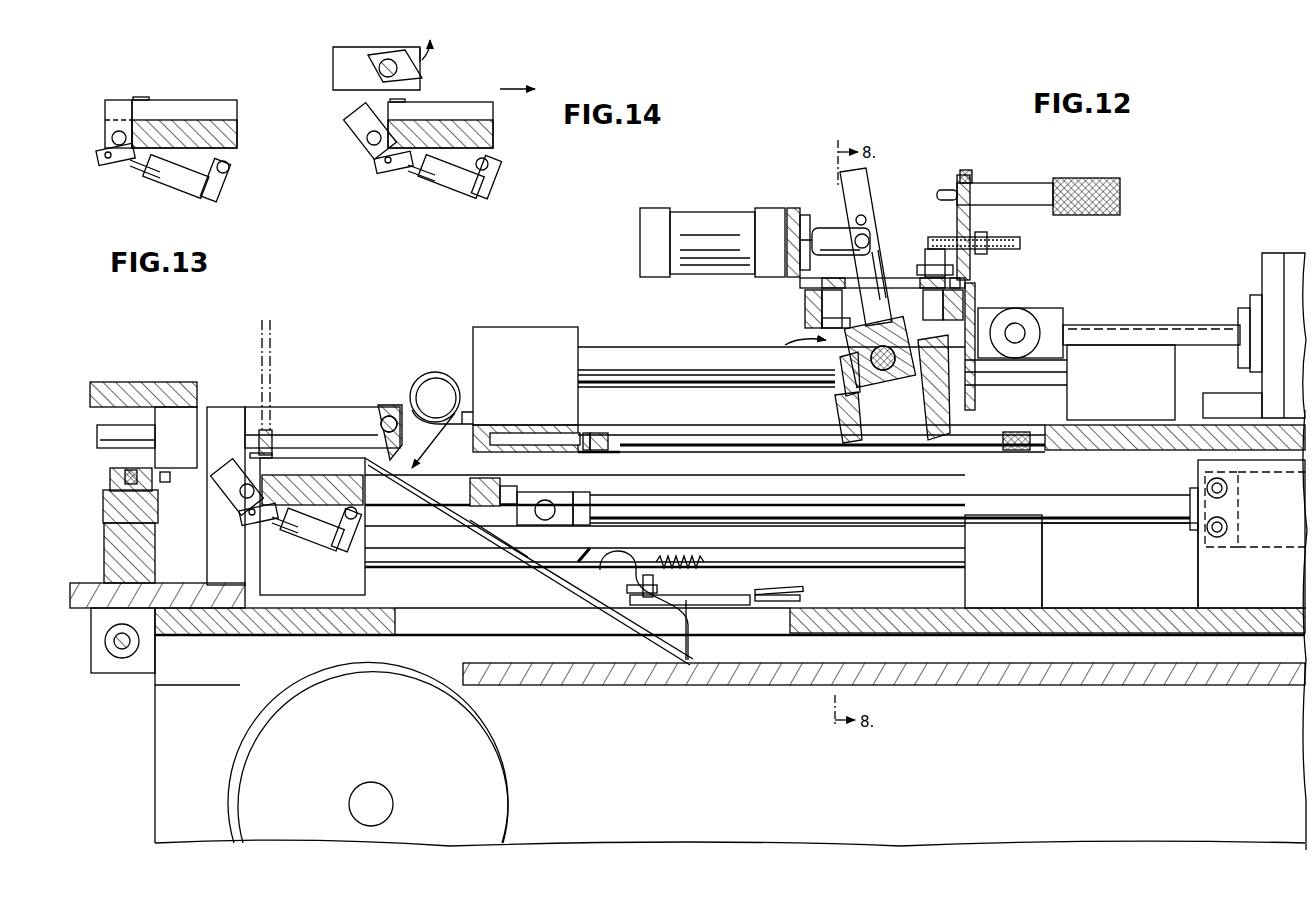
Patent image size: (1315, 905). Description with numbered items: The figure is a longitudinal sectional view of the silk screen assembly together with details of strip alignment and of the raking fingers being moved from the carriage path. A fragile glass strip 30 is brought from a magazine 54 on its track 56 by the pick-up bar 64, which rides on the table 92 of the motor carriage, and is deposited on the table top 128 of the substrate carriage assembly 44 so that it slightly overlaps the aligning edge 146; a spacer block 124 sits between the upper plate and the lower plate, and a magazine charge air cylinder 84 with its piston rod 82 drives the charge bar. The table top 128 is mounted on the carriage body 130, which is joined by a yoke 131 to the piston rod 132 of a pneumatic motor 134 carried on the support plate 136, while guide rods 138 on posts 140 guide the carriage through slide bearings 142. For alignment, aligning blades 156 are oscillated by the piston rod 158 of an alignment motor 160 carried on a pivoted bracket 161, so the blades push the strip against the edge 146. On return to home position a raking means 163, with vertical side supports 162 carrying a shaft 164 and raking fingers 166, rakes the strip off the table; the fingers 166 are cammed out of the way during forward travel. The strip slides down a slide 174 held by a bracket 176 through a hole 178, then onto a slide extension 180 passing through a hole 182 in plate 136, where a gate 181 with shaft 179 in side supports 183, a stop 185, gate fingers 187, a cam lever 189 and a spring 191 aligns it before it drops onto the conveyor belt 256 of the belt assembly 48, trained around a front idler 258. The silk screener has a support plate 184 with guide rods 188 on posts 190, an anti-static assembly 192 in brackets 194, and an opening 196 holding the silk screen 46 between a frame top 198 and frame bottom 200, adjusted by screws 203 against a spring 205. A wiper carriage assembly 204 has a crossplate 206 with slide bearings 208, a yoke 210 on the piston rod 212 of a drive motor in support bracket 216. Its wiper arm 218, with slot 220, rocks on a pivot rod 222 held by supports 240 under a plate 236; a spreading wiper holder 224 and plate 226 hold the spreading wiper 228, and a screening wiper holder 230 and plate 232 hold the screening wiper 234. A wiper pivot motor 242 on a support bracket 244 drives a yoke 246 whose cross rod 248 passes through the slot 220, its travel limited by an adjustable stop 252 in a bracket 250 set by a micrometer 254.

In FIG. 13, the glass strip 30 is at (141, 98).
In FIG. 14, the glass strip 30 is at (405, 99).
In FIG. 12, the glass strip 30 is at (122, 474).
In FIG. 12, the substrate carriage assembly 44 is at (437, 440).
In FIG. 12, the silk screen 46 is at (732, 458).
In FIG. 12, the belt assembly 48 is at (790, 640).
In FIG. 12, the magazine 54 is at (109, 480).
In FIG. 12, the track 56 is at (103, 512).
In FIG. 12, the pick-up bar 64 is at (273, 438).
In FIG. 12, the piston rod 82 is at (125, 652).
In FIG. 12, the magazine charge air cylinder 84 is at (108, 675).
In FIG. 12, the table 92 is at (118, 383).
In FIG. 12, the spacer block 124 is at (112, 556).
In FIG. 13, the table top 128 is at (195, 101).
In FIG. 14, the table top 128 is at (478, 102).
In FIG. 12, the table top 128 is at (335, 458).
In FIG. 13, the carriage body 130 is at (238, 136).
In FIG. 14, the carriage body 130 is at (495, 135).
In FIG. 12, the carriage body 130 is at (478, 480).
In FIG. 12, the yoke 131 is at (535, 492).
In FIG. 12, the piston rod 132 is at (692, 494).
In FIG. 12, the pneumatic motor 134 is at (1255, 478).
In FIG. 12, the support plate 136 is at (1125, 606).
In FIG. 12, the guide rods 138 is at (785, 580).
In FIG. 12, the posts 140 is at (1043, 556).
In FIG. 12, the slide bearings 142 is at (365, 585).
In FIG. 12, the aligning edge 146 is at (268, 468).
In FIG. 13, the aligning blades 156 is at (108, 110).
In FIG. 14, the aligning blades 156 is at (355, 125).
In FIG. 12, the aligning blades 156 is at (240, 460).
In FIG. 13, the piston rod 158 is at (126, 165).
In FIG. 14, the piston rod 158 is at (395, 168).
In FIG. 12, the piston rod 158 is at (262, 524).
In FIG. 13, the alignment motor 160 is at (185, 190).
In FIG. 14, the alignment motor 160 is at (456, 190).
In FIG. 12, the alignment motor 160 is at (318, 542).
In FIG. 13, the pivoted bracket 161 is at (210, 200).
In FIG. 14, the pivoted bracket 161 is at (480, 200).
In FIG. 12, the pivoted bracket 161 is at (350, 555).
In FIG. 12, the vertical side supports 162 is at (325, 405).
In FIG. 12, the raking means 163 is at (338, 380).
In FIG. 14, the shaft 164 is at (398, 56).
In FIG. 12, the shaft 164 is at (363, 405).
In FIG. 14, the raking fingers 166 is at (420, 40).
In FIG. 12, the raking fingers 166 is at (402, 445).
In FIG. 12, the slide 174 is at (490, 548).
In FIG. 12, the bracket 176 is at (445, 505).
In FIG. 12, the hole 178 is at (470, 490).
In FIG. 12, the shaft 179 is at (655, 600).
In FIG. 12, the slide extension 180 is at (648, 645).
In FIG. 12, the gate 181 is at (584, 555).
In FIG. 12, the hole 182 is at (790, 636).
In FIG. 12, the side supports 183 is at (726, 605).
In FIG. 12, the support plate 184 is at (1095, 440).
In FIG. 12, the stop 185 is at (626, 588).
In FIG. 12, the gate fingers 187 is at (690, 650).
In FIG. 12, the guide rods 188 is at (716, 346).
In FIG. 12, the cam lever 189 is at (618, 546).
In FIG. 12, the posts 190 is at (576, 327).
In FIG. 12, the spring 191 is at (700, 548).
In FIG. 12, the anti-static assembly 192 is at (432, 398).
In FIG. 12, the brackets 194 is at (466, 410).
In FIG. 12, the opening 196 is at (587, 433).
In FIG. 12, the frame top 198 is at (605, 434).
In FIG. 12, the frame bottom 200 is at (592, 453).
In FIG. 12, the screws 203 is at (522, 436).
In FIG. 12, the wiper carriage assembly 204 is at (784, 338).
In FIG. 12, the spring 205 is at (1036, 452).
In FIG. 12, the carriage crossplate 206 is at (805, 294).
In FIG. 12, the slide bearings 208 is at (975, 390).
In FIG. 12, the yoke 210 is at (1000, 312).
In FIG. 12, the piston rod 212 is at (1133, 325).
In FIG. 12, the support bracket 216 is at (1252, 395).
In FIG. 12, the wiper arm 218 is at (883, 295).
In FIG. 12, the slot 220 is at (866, 216).
In FIG. 12, the pivot rod 222 is at (895, 385).
In FIG. 12, the spreading wiper holder 224 is at (840, 372).
In FIG. 12, the plate 226 is at (836, 420).
In FIG. 12, the spreading wiper 228 is at (855, 440).
In FIG. 12, the screening wiper holder 230 is at (918, 322).
In FIG. 12, the plate 232 is at (976, 300).
In FIG. 12, the screening wiper 234 is at (950, 420).
In FIG. 12, the plate 236 is at (965, 278).
In FIG. 12, the supports 240 is at (805, 316).
In FIG. 12, the wiper pivot motor 242 is at (708, 210).
In FIG. 12, the support bracket 244 is at (793, 207).
In FIG. 12, the yoke 246 is at (840, 240).
In FIG. 12, the cross rod 248 is at (868, 240).
In FIG. 12, the bracket 250 is at (971, 212).
In FIG. 12, the adjustable stop 252 is at (952, 240).
In FIG. 12, the micrometer 254 is at (994, 184).
In FIG. 12, the conveyor belt 256 is at (1045, 664).
In FIG. 12, the front idler 258 is at (508, 790).